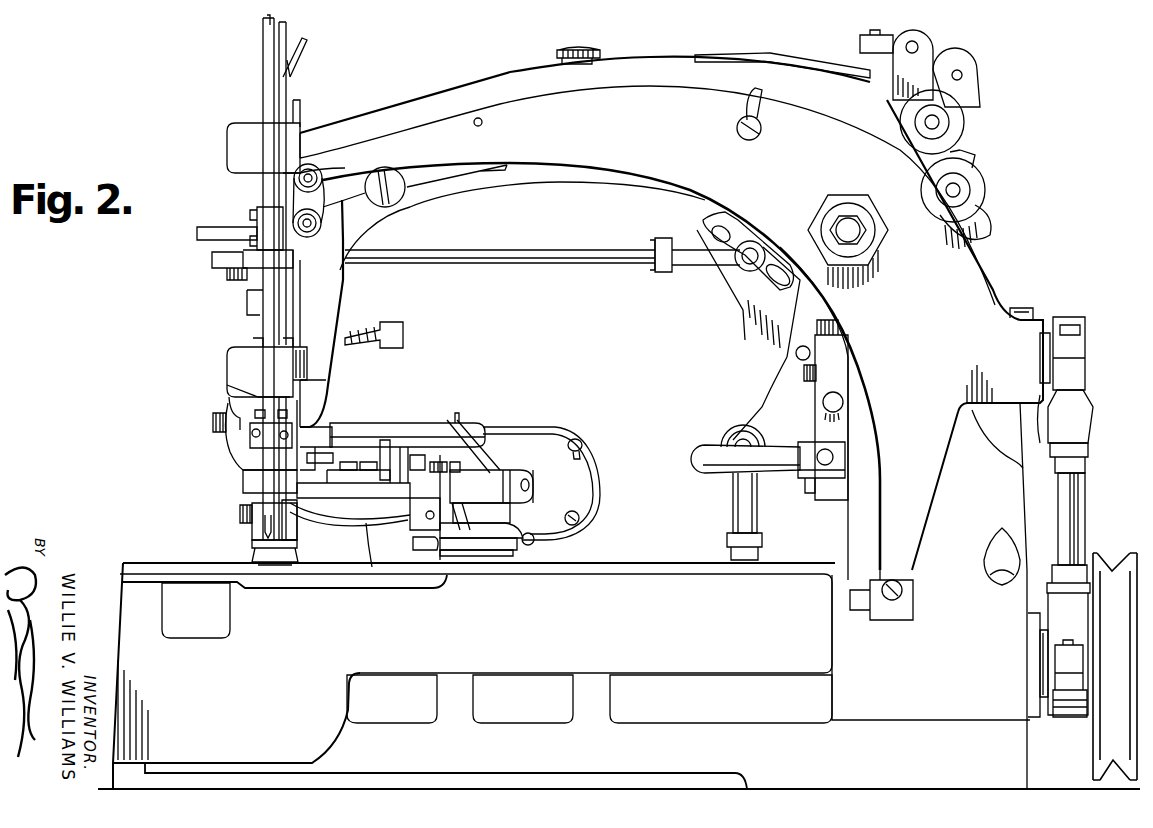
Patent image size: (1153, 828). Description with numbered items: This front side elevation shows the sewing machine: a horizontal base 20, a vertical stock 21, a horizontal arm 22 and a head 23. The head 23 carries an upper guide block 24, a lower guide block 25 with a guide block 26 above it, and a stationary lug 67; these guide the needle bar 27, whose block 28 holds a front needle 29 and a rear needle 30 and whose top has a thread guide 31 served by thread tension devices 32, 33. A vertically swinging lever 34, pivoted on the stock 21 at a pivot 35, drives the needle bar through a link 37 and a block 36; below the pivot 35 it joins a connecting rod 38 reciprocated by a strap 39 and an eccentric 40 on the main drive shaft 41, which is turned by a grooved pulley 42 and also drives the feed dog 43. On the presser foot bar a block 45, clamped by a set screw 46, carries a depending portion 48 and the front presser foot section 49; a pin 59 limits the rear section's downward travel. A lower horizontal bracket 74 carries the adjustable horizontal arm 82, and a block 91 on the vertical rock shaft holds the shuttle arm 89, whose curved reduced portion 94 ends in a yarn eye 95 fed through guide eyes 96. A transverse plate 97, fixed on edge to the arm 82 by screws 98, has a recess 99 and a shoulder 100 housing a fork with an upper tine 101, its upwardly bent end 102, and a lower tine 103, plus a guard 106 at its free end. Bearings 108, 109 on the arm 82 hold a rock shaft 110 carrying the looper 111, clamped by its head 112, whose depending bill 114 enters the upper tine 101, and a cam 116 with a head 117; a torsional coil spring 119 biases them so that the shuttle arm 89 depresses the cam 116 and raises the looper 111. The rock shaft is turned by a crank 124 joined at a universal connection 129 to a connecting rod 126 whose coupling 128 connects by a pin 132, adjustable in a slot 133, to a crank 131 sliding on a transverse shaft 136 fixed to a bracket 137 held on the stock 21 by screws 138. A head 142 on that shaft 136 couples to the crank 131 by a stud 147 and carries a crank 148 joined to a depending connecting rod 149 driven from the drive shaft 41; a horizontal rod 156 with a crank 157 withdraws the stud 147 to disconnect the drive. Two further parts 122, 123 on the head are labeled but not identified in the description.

The bed 20 is at (150, 570).
The standard 21 is at (996, 285).
The overhanging arm 22 is at (548, 183).
The head 23 is at (348, 283).
The bracket 24 is at (229, 152).
The presser bar lifter bracket 25 is at (240, 458).
The guide block 26 is at (228, 370).
The needle bar 27 is at (262, 325).
The needle clamp 28 is at (250, 442).
The needle 29 is at (268, 520).
The presser foot 30 is at (290, 527).
The presser bar 31 is at (265, 27).
The pulley 32 is at (966, 122).
The pulley 33 is at (987, 190).
The arm top 34 is at (601, 355).
The hex nut 35 is at (835, 225).
The guide block 36 is at (257, 217).
The thread take-up 37 is at (327, 212).
The vertical shaft 38 is at (1080, 512).
The bearing sleeve 39 is at (1065, 620).
The collar 40 is at (1053, 676).
The bushing 41 is at (1044, 657).
The belt pulley 42 is at (1110, 565).
The throat plate 43 is at (253, 555).
The feed dog 45 is at (300, 510).
The thumb screw 46 is at (243, 510).
The needle hole 48 is at (266, 567).
The feed slot 49 is at (298, 562).
The feed bar 59 is at (300, 545).
The guide 67 is at (247, 303).
The plate 74 is at (250, 481).
The feed lever 82 is at (387, 487).
The bar 89 is at (393, 430).
The bracket arm 91 is at (330, 425).
The ring 94 is at (545, 440).
The screw 95 is at (529, 545).
The screw 96 is at (583, 446).
The block 97 is at (460, 480).
The link 98 is at (448, 470).
The lever 99 is at (458, 525).
The plate 100 is at (512, 531).
The base plate 101 is at (455, 551).
The lug 102 is at (417, 533).
The plate 103 is at (470, 551).
The cover plate 106 is at (400, 568).
The screw 108 is at (383, 480).
The screw 109 is at (451, 447).
The hole 110 is at (530, 485).
The pin 111 is at (480, 480).
The pin 112 is at (530, 467).
The tab 114 is at (435, 550).
The rod 116 is at (447, 455).
The pin 117 is at (417, 460).
The nut 119 is at (423, 470).
The lug 122 is at (229, 405).
The thumb screw 123 is at (213, 422).
The rod 124 is at (198, 236).
The rod 126 is at (455, 255).
The collar 128 is at (681, 273).
The block 129 is at (212, 260).
The lever 131 is at (735, 280).
The pivot 132 is at (748, 262).
The slot 133 is at (712, 232).
The screw 136 is at (845, 403).
The plate 137 is at (817, 426).
The screw 138 is at (797, 387).
The link 142 is at (766, 380).
The pivot screw 147 is at (787, 357).
The arm 148 is at (742, 425).
The slide plate 149 is at (763, 554).
The block 156 is at (812, 487).
The lever 157 is at (710, 462).